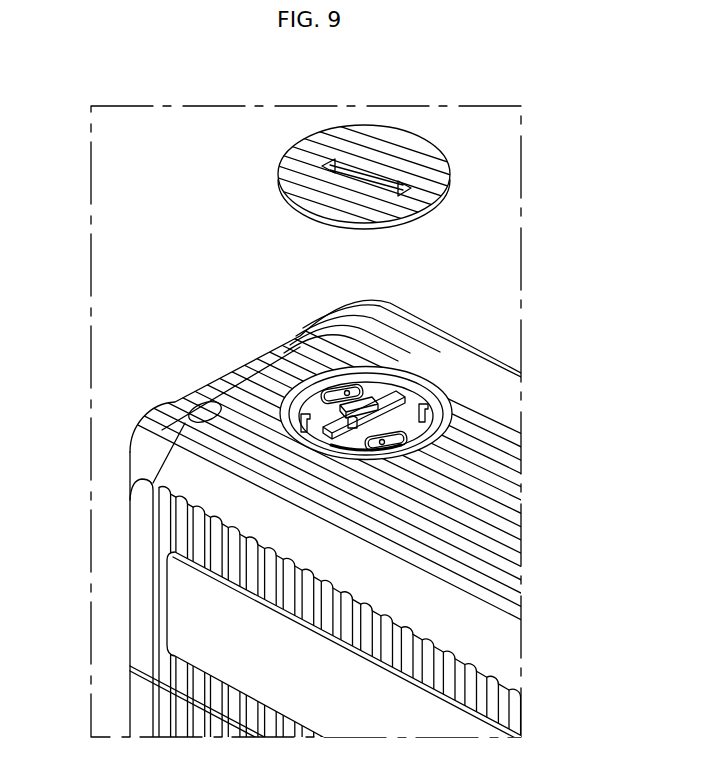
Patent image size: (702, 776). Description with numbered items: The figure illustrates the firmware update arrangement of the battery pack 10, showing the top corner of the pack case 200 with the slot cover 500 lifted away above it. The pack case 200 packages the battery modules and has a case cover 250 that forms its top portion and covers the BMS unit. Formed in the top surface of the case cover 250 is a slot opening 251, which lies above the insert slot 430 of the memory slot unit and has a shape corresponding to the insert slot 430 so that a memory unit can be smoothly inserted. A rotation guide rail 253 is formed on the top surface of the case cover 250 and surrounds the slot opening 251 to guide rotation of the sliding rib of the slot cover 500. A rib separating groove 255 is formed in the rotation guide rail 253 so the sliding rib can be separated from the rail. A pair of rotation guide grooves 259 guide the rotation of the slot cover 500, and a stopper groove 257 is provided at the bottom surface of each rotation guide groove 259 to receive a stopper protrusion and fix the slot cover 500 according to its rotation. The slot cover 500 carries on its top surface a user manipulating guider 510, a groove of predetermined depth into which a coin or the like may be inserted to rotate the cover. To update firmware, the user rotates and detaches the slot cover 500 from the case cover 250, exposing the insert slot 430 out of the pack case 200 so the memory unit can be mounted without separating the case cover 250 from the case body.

The battery pack 10 is at (156, 186).
The pack case 200 is at (115, 550).
The case cover 250 is at (508, 440).
The rotation guide rail 253 is at (434, 428).
The slot opening 251 is at (404, 393).
The rib separating groove 255 is at (426, 405).
The stopper groove 257 is at (347, 389).
The rotation guide groove 259 is at (364, 390).
The insert slot 430 is at (331, 424).
The slot cover 500 is at (455, 153).
The user manipulating guider 510 is at (367, 170).